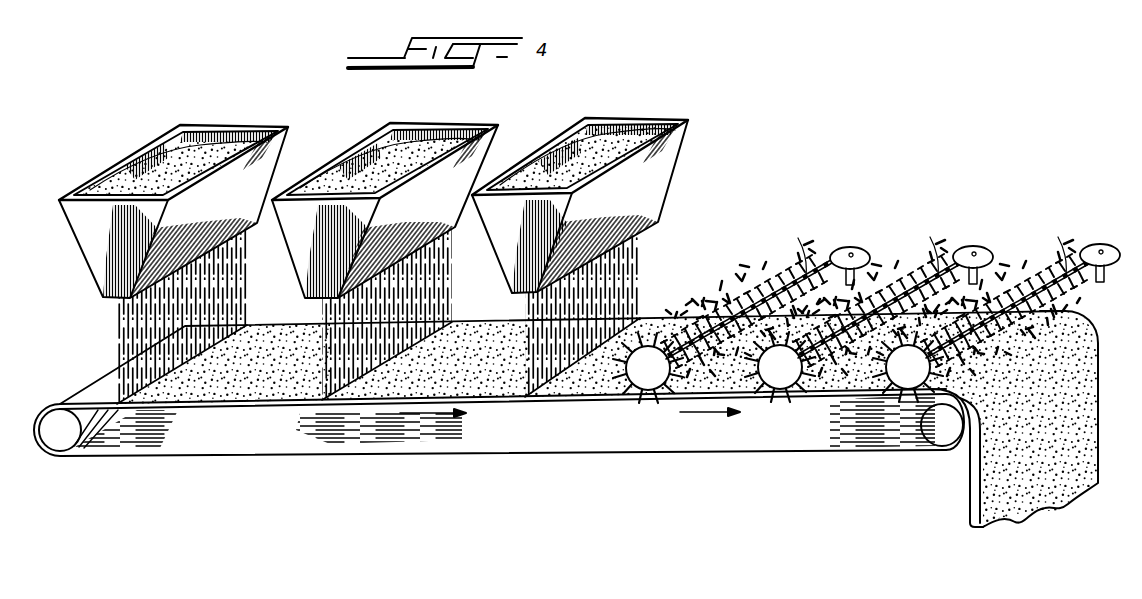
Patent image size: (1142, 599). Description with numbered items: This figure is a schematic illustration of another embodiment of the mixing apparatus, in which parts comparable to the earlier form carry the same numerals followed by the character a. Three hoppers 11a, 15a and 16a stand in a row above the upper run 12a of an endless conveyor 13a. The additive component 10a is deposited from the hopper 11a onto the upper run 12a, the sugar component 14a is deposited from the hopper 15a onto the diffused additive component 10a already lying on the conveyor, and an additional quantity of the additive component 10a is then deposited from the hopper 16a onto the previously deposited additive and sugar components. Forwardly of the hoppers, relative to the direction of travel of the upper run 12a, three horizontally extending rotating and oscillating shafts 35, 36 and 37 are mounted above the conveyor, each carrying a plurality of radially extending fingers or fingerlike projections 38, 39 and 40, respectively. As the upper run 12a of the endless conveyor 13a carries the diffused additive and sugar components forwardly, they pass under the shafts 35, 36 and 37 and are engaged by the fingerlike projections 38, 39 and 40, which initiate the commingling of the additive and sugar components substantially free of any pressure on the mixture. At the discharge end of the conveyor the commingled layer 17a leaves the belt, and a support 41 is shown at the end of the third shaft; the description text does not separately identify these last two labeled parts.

The additive component 10a is at (227, 148).
The hopper 11a is at (267, 162).
The upper run 12a is at (98, 383).
The endless conveyor 13a is at (585, 457).
The sugar component 14a is at (413, 152).
The hopper 15a is at (482, 152).
The hopper 16a is at (667, 168).
The formed sheet 17a is at (993, 488).
The rotating and oscillating shaft 35 is at (647, 378).
The rotating and oscillating shaft 36 is at (778, 378).
The rotating and oscillating shaft 37 is at (904, 378).
The fingerlike projections 38 is at (792, 280).
The fingerlike projections 39 is at (940, 272).
The fingerlike projections 40 is at (1070, 285).
The shaft support bearing 41 is at (1070, 284).